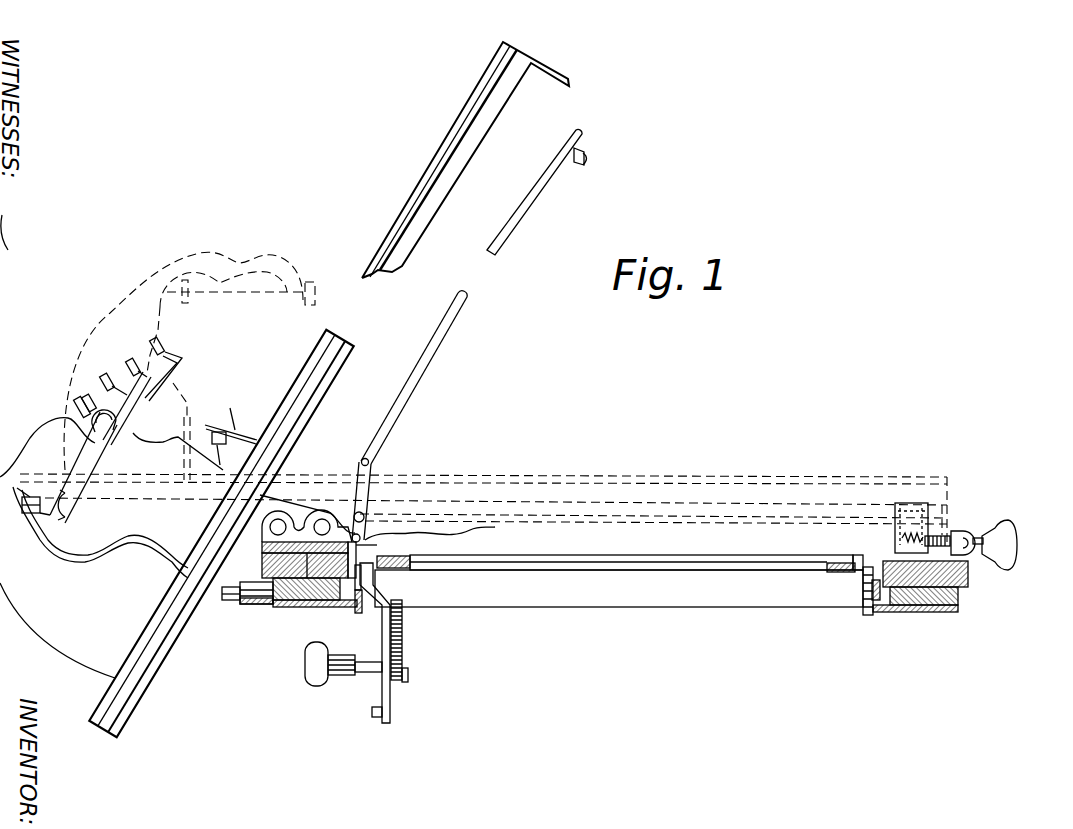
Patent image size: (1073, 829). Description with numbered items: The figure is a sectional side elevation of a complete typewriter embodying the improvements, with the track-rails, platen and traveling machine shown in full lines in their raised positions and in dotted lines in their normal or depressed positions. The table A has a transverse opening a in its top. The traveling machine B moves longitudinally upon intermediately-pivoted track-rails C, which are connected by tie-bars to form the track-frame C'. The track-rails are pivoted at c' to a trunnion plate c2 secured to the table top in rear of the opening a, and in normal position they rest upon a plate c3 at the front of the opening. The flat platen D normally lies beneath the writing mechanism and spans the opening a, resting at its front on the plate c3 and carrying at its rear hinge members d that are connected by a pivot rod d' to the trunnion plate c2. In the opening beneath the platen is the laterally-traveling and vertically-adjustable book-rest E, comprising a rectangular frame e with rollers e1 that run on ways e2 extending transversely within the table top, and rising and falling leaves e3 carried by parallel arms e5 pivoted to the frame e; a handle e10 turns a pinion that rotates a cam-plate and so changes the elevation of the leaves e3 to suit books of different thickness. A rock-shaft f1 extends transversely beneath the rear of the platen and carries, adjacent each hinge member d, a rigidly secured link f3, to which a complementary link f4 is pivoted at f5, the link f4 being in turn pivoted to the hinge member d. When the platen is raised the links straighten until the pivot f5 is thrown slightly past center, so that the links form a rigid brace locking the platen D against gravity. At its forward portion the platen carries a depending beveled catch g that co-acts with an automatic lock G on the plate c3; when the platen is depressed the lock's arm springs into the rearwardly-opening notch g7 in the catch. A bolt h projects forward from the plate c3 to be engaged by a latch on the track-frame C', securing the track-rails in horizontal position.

The table A is at (962, 597).
The traveling machine B is at (70, 606).
The track-rails C is at (465, 160).
The track-frame C' is at (440, 161).
The flat platen D is at (452, 323).
The hinge members d is at (307, 478).
The pivot rod d' is at (298, 607).
The pivot c' is at (296, 562).
The trunnion plate c2 is at (278, 530).
The plate c3 is at (970, 578).
The book-rest E is at (576, 610).
The rectangular frame e is at (690, 590).
The rollers e1 is at (928, 653).
The ways e2 is at (880, 614).
The rising and falling leaves e3 is at (565, 555).
The parallel arms e5 is at (392, 702).
The handle e10 is at (350, 676).
The rock-shaft f1 is at (405, 550).
The link f3 is at (420, 536).
The complementary link f4 is at (373, 473).
The pivot f5 is at (363, 513).
The transverse opening a is at (867, 565).
The automatic lock G is at (920, 534).
The bolt h is at (1006, 526).
The beveled catch g is at (586, 152).
The notch g7 is at (586, 175).